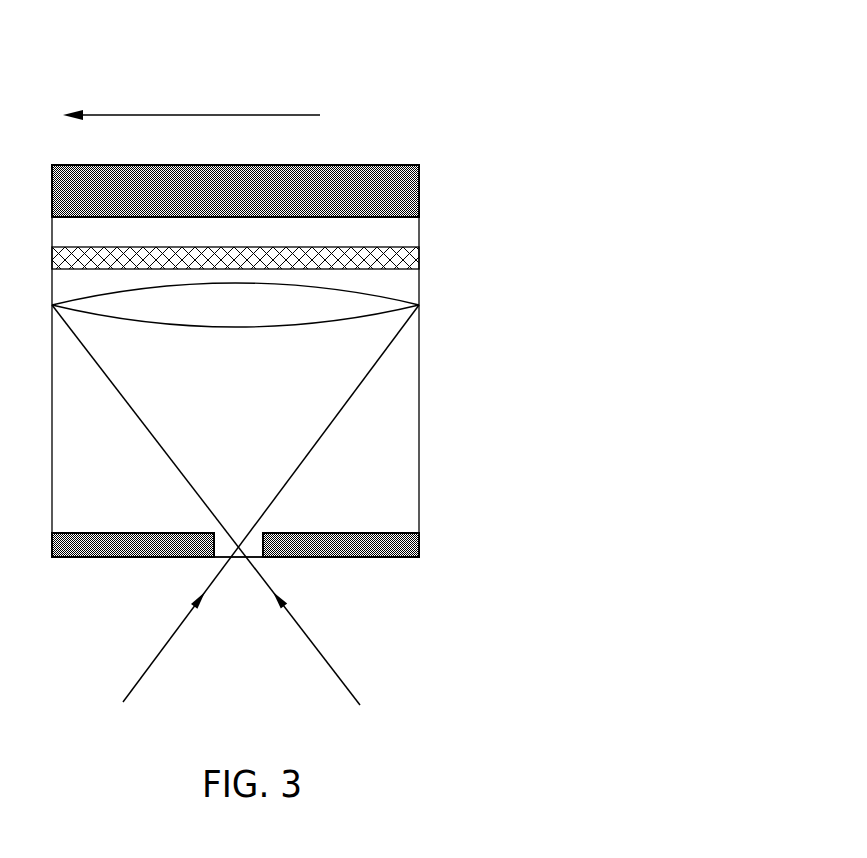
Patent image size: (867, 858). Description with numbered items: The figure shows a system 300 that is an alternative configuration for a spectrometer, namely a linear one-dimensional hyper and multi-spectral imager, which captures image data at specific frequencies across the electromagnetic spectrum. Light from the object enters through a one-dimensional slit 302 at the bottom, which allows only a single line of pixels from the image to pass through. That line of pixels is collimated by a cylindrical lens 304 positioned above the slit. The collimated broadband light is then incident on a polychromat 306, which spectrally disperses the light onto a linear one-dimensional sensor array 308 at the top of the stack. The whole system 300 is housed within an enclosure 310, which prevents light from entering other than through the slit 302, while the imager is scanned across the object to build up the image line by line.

The system 300 is at (467, 68).
The 1D slit 302 is at (419, 545).
The cylindrical lens 304 is at (419, 305).
The polychromat 306 is at (419, 255).
The linear (1D) sensor array 308 is at (419, 190).
The enclosure 310 is at (419, 414).